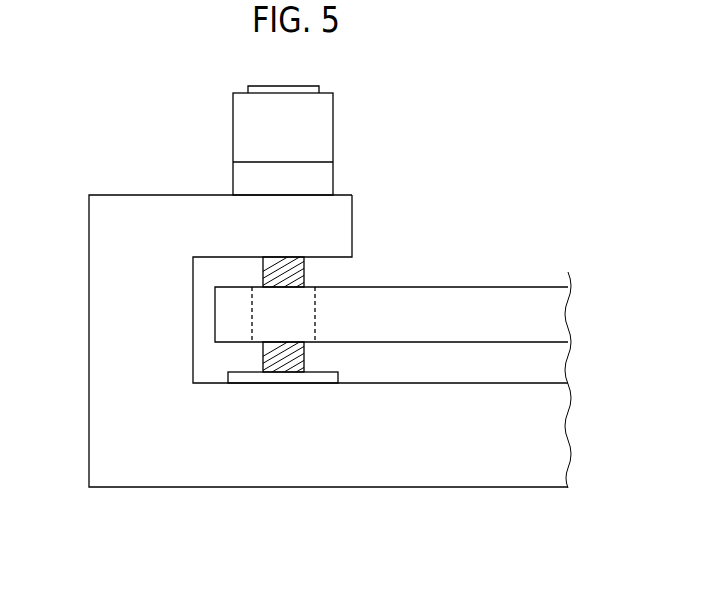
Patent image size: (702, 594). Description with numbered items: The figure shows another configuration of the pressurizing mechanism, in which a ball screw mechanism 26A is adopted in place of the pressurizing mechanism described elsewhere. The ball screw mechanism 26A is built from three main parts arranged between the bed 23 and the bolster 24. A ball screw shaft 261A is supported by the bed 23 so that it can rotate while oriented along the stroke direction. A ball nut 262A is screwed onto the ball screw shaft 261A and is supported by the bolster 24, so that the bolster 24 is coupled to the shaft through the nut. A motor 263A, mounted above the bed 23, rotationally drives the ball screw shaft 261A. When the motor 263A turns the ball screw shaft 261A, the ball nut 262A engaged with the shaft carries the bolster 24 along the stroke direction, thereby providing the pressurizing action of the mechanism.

The bed 23 is at (220, 480).
The bolster 24 is at (480, 287).
The ball screw mechanism 26A is at (148, 115).
The ball screw shaft 261A is at (285, 285).
The ball nut 262A is at (315, 320).
The motor 263A is at (328, 128).